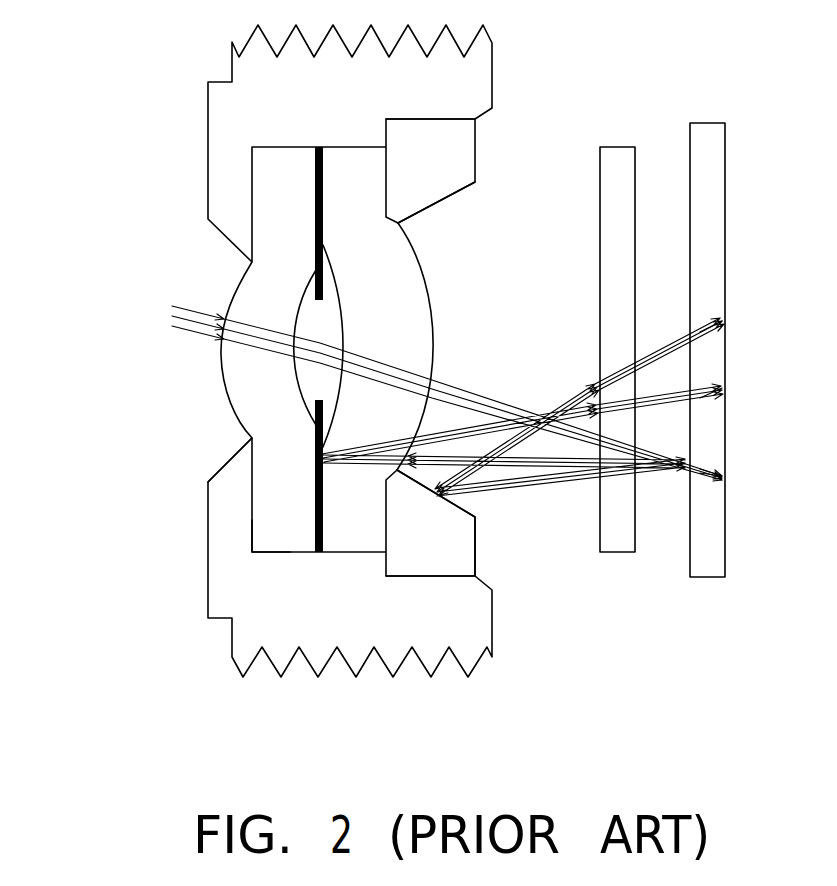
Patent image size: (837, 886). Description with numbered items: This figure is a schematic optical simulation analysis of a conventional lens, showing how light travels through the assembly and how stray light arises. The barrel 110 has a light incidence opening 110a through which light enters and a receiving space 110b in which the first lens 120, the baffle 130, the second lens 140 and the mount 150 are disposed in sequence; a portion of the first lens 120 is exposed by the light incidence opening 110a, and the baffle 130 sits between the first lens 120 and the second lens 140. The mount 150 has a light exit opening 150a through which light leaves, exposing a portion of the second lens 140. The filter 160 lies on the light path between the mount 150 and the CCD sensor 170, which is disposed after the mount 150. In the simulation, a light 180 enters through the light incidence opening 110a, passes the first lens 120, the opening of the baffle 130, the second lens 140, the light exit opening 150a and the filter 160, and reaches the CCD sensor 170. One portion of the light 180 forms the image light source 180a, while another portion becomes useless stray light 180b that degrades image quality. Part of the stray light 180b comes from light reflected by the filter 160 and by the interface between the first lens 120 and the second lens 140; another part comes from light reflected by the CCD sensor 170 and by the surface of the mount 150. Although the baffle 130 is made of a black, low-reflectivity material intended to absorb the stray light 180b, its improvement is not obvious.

The barrel 110 is at (223, 580).
The light incidence opening 110a is at (212, 462).
The receiving space 110b is at (258, 542).
The first lens 120 is at (285, 525).
The baffle 130 is at (317, 553).
The second lens 140 is at (355, 520).
The mount 150 is at (435, 543).
The light exit opening 150a is at (466, 192).
The filter 160 is at (622, 533).
The charge coupled device (CCD) sensor 170 is at (710, 533).
The light 180 is at (195, 331).
The image light source 180a is at (726, 478).
The stray light 180b is at (726, 319).